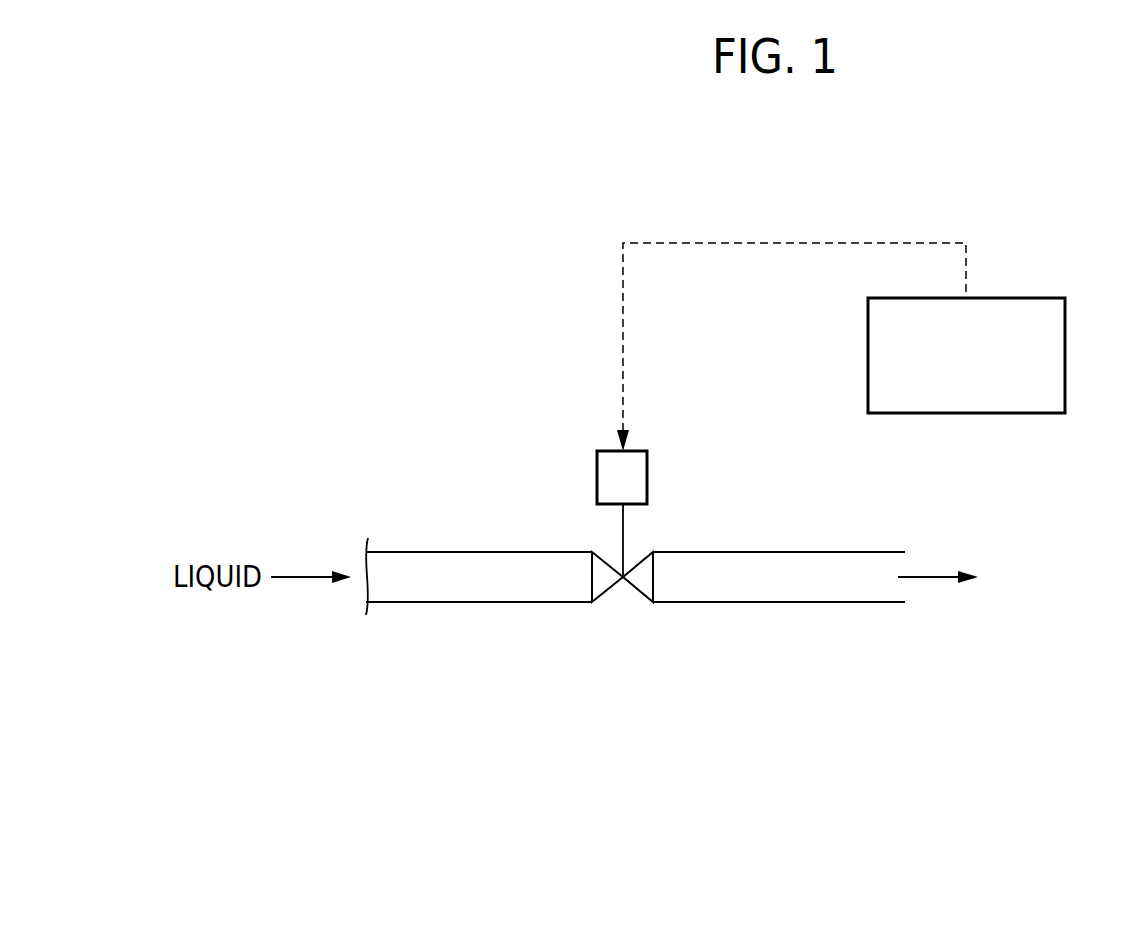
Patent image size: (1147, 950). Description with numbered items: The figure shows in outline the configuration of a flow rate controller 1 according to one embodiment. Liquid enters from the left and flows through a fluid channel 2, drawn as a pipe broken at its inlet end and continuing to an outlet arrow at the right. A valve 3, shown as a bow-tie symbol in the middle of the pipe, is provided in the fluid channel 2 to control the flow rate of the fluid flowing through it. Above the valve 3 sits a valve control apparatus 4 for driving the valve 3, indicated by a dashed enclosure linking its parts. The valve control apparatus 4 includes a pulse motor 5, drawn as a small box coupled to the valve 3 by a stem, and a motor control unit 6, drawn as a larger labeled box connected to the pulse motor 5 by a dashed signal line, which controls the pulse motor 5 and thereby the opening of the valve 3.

The flow rate controller 1 is at (683, 783).
The fluid channel 2 is at (470, 603).
The valve 3 is at (602, 585).
The valve control apparatus 4 is at (638, 193).
The pulse motor 5 is at (647, 478).
The motor control unit 6 is at (1065, 342).